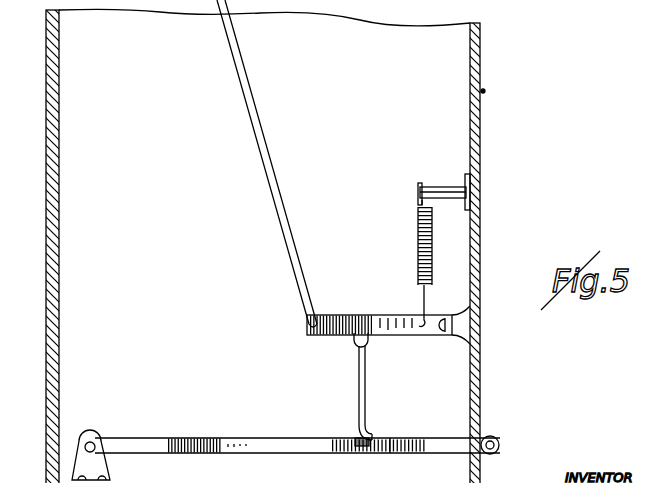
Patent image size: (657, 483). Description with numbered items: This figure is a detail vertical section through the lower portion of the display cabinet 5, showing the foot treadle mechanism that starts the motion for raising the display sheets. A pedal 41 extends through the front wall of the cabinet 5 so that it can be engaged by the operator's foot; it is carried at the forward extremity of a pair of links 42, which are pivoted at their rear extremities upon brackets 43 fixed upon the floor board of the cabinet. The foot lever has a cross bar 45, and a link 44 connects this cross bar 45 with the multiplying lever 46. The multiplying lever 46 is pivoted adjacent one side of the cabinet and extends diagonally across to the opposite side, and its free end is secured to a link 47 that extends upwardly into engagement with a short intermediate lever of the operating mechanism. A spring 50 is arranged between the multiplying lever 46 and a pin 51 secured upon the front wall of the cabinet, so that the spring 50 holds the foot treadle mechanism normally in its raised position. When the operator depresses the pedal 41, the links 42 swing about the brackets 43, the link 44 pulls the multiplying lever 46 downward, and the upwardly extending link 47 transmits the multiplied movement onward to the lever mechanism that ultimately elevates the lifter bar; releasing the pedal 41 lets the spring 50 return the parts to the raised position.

The cabinet 5 is at (483, 374).
The pedal 41 is at (503, 437).
The links 42 is at (263, 414).
The brackets 43 is at (88, 436).
The link 44 is at (368, 383).
The cross bar 45 is at (357, 432).
The multiplying lever 46 is at (348, 313).
The link 47 is at (270, 143).
The spring 50 is at (420, 213).
The pin 51 is at (440, 190).